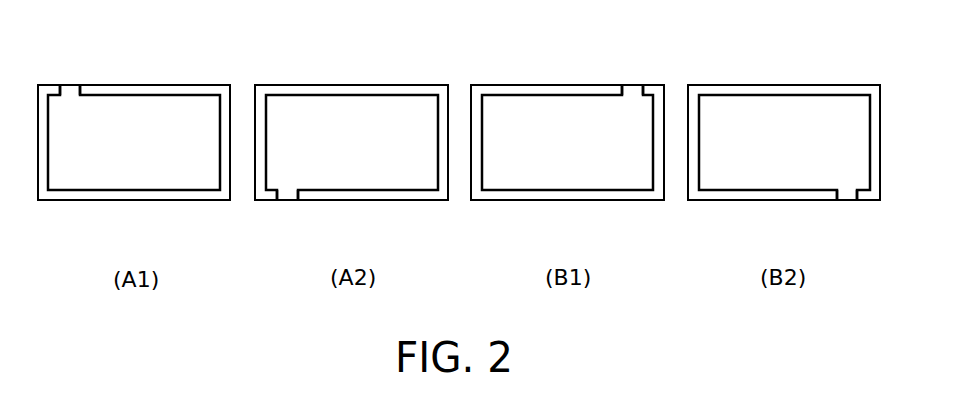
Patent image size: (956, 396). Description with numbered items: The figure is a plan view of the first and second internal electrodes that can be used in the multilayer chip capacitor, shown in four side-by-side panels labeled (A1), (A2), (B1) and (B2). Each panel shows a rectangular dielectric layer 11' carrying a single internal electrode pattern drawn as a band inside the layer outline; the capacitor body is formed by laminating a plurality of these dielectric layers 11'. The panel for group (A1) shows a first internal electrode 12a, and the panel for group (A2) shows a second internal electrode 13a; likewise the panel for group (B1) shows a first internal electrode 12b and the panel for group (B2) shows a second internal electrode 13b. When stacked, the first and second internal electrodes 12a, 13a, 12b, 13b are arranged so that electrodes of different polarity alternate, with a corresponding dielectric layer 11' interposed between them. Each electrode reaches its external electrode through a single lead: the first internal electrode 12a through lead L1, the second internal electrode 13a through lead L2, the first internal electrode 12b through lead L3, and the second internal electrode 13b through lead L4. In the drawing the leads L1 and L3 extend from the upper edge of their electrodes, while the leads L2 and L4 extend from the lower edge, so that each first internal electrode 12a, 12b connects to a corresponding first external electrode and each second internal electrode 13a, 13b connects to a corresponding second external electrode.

The dielectric layer 11' is at (459, 145).
The first internal electrode 12a is at (70, 180).
The second internal electrode 13a is at (373, 105).
The first internal electrode 12b is at (520, 105).
The second internal electrode 13b is at (779, 105).
The lead L1 is at (70, 90).
The lead L2 is at (288, 192).
The lead L3 is at (633, 90).
The lead L4 is at (850, 192).